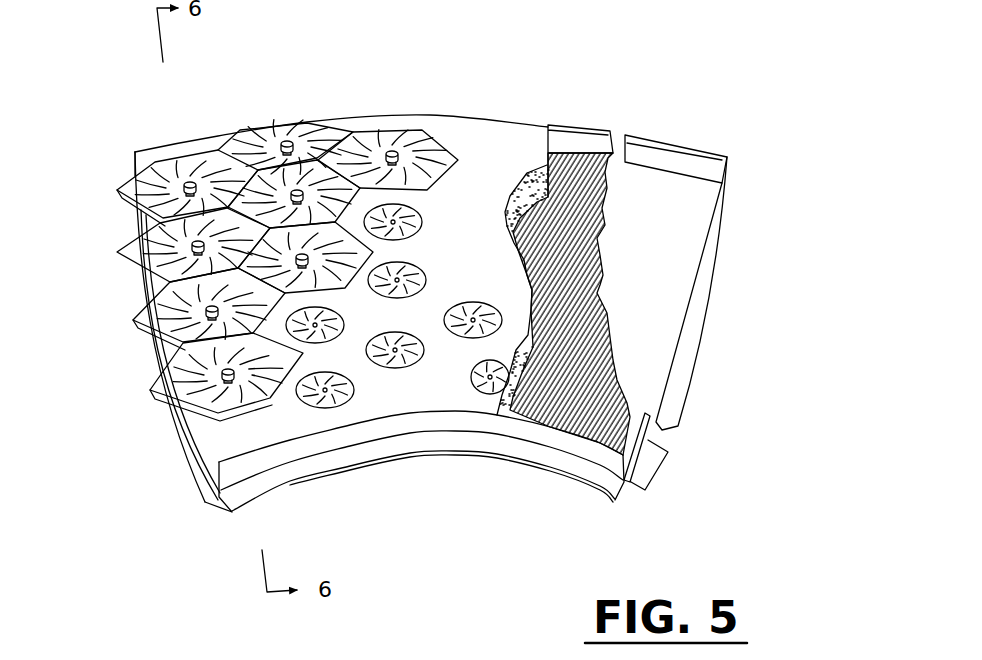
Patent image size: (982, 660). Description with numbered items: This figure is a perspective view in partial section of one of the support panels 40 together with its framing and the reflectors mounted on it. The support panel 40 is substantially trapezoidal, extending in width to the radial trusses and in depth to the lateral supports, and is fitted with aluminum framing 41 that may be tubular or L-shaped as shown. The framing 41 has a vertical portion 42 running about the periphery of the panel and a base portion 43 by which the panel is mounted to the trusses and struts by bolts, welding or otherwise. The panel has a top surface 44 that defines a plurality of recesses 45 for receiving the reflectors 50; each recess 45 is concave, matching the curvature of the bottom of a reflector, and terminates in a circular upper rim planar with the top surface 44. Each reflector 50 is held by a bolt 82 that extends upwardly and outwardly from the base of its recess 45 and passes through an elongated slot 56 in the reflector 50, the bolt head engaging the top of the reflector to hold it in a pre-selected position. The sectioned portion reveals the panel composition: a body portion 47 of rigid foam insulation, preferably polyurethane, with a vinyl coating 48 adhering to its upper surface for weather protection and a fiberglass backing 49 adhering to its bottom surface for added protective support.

The support panel 40 is at (733, 282).
The aluminum framing 41 is at (257, 493).
The vertical portion 42 is at (180, 420).
The base portion 43 is at (190, 470).
The top surface 44 is at (300, 414).
The recess 45 is at (398, 372).
The body portion 47 is at (540, 187).
The vinyl coating 48 is at (493, 137).
The fiberglass backing 49 is at (590, 348).
The reflector 50 is at (357, 157).
The elongated slot 56 is at (287, 140).
The bolt 82 is at (393, 152).